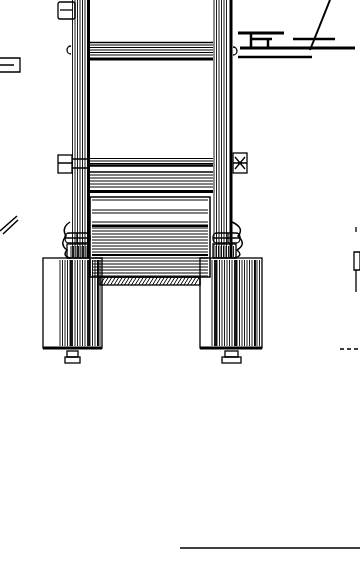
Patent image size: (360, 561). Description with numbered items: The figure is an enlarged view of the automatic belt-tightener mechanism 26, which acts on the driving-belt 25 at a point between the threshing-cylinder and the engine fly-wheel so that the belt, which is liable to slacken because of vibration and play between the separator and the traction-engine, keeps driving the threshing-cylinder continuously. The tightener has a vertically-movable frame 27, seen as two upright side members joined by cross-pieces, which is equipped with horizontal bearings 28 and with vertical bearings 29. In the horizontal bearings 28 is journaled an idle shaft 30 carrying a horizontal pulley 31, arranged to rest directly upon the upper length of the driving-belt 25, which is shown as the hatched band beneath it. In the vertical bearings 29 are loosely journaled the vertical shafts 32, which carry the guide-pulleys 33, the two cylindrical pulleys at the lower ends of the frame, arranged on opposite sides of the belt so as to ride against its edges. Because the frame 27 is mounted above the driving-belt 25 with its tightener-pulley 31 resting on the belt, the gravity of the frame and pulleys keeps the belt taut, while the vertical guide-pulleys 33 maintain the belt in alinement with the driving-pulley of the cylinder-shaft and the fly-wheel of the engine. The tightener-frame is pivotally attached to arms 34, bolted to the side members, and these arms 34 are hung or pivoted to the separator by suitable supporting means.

The driving-belt 25 is at (165, 285).
The belt-tightener mechanism 26 is at (151, 117).
The vertically-movable frame 27 is at (228, 131).
The horizontal bearings 28 is at (63, 234).
The vertical bearings 29 is at (63, 257).
The idle shaft 30 is at (86, 236).
The horizontal pulley 31 is at (150, 237).
The vertical shafts 32 is at (72, 363).
The guide-pulleys 33 is at (55, 310).
The arms 34 is at (60, 9).